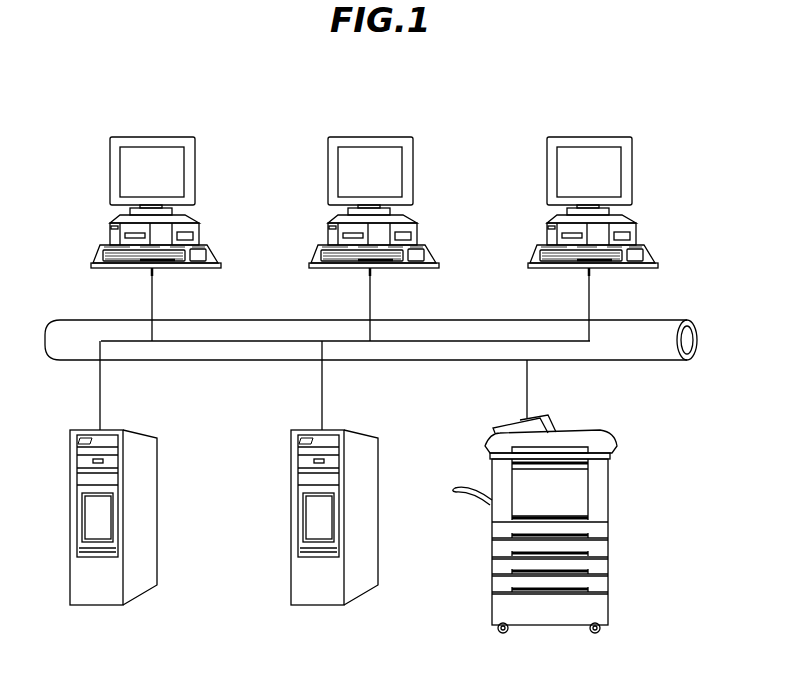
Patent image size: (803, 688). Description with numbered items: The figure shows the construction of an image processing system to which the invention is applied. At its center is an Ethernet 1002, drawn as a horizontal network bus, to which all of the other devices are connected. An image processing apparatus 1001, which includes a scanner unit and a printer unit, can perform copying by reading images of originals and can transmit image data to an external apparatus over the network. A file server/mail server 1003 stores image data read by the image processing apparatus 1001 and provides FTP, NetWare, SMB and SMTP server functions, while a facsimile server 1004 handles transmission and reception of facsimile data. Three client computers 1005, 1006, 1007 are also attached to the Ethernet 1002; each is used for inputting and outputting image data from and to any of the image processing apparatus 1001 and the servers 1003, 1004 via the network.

The image processing apparatus 1001 is at (547, 627).
The Ethernet 1002 is at (663, 320).
The file server/mail server 1003 is at (319, 608).
The facsimile server 1004 is at (90, 607).
The client computer 1005 is at (187, 118).
The client computer 1006 is at (405, 118).
The client computer 1007 is at (624, 118).